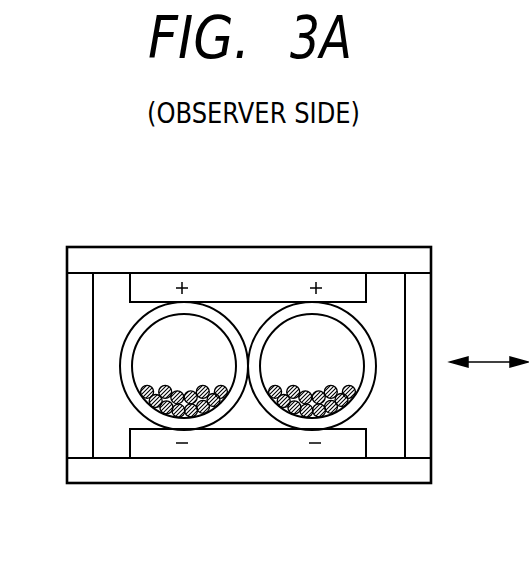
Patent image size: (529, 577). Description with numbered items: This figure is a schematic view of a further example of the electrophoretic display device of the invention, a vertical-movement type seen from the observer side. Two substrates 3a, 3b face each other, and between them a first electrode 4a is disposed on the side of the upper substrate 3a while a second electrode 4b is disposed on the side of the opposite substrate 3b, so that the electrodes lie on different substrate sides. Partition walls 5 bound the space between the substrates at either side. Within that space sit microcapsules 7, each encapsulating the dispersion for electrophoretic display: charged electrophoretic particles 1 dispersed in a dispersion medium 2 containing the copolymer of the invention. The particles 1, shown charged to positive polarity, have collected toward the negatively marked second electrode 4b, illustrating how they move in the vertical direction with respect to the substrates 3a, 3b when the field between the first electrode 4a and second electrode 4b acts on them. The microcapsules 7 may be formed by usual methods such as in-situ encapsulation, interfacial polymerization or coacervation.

The charged electrophoretic particles 1 is at (186, 392).
The dispersion medium 2 is at (199, 344).
The substrate 3a is at (354, 268).
The substrate 3b is at (328, 465).
The first electrode 4a is at (150, 284).
The second electrode 4b is at (160, 440).
The partition walls 5 is at (88, 318).
The microcapsules 7 is at (358, 400).